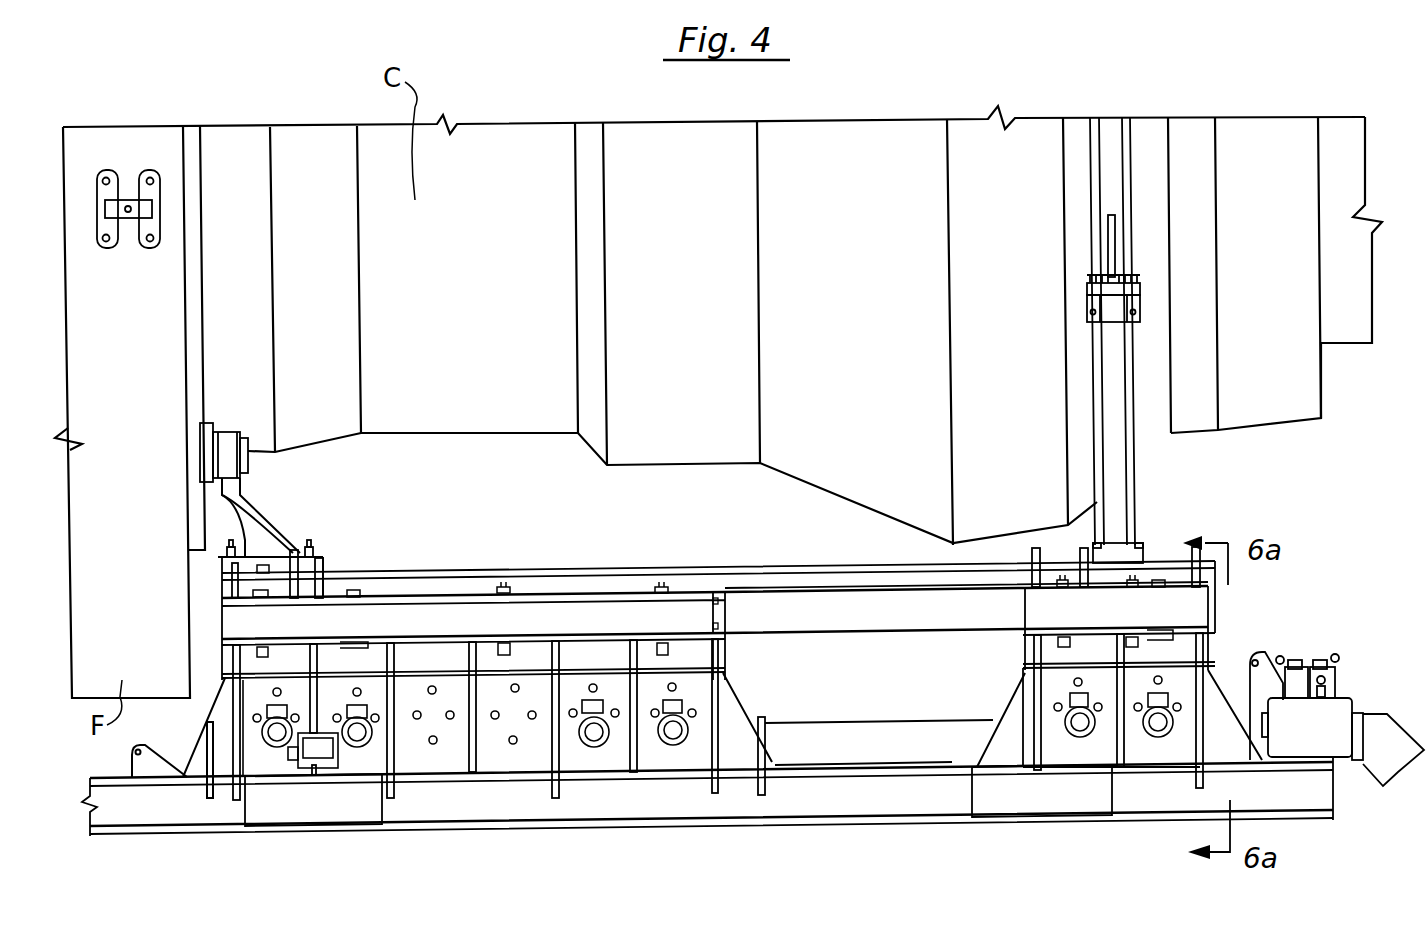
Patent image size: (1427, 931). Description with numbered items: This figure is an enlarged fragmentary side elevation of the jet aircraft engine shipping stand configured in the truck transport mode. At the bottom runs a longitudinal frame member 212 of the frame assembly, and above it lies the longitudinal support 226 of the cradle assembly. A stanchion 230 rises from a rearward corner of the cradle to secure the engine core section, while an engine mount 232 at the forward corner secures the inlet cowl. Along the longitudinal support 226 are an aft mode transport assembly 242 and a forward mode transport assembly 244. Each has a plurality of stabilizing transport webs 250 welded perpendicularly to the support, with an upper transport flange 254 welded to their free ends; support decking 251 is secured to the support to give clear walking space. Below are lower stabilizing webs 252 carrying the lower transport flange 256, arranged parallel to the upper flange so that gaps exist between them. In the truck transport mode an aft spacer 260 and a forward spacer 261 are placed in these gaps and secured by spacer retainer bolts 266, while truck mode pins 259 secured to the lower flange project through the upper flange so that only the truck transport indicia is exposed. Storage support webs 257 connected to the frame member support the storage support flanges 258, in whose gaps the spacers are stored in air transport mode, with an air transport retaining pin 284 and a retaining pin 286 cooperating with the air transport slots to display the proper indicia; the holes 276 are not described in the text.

The longitudinal frame member 212 is at (510, 797).
The longitudinal support 226 is at (890, 628).
The stanchion 230 is at (1120, 460).
The engine mount 232 is at (257, 515).
The aft mode transport assembly 242 is at (1248, 607).
The forward mode transport assembly 244 is at (208, 621).
The stabilizing transport web 250 is at (330, 565).
The support decking 251 is at (562, 573).
The lower stabilizing web 252 is at (707, 660).
The upper transport flange 254 is at (695, 572).
The lower transport flange 256 is at (725, 617).
The storage support web 257 is at (637, 747).
The storage support flange 258 is at (703, 700).
The truck mode pin 259 is at (357, 588).
The aft spacer 260 is at (1002, 618).
The forward spacer 261 is at (317, 622).
The spacer retainer bolt 266 is at (262, 568).
The mounting holes 276 is at (433, 744).
The air transport retaining pin 284 is at (725, 663).
The retaining pin 286 is at (1213, 657).